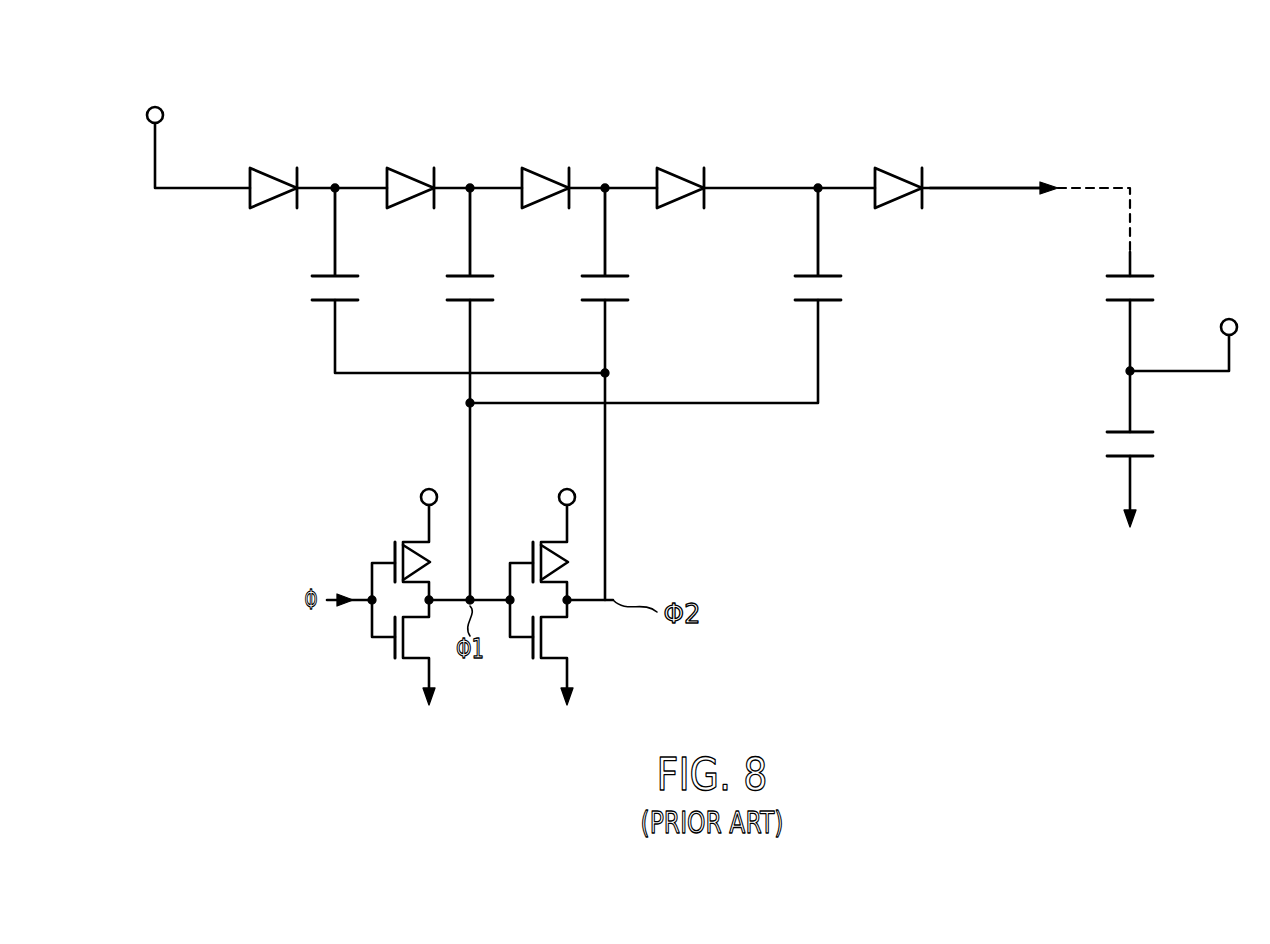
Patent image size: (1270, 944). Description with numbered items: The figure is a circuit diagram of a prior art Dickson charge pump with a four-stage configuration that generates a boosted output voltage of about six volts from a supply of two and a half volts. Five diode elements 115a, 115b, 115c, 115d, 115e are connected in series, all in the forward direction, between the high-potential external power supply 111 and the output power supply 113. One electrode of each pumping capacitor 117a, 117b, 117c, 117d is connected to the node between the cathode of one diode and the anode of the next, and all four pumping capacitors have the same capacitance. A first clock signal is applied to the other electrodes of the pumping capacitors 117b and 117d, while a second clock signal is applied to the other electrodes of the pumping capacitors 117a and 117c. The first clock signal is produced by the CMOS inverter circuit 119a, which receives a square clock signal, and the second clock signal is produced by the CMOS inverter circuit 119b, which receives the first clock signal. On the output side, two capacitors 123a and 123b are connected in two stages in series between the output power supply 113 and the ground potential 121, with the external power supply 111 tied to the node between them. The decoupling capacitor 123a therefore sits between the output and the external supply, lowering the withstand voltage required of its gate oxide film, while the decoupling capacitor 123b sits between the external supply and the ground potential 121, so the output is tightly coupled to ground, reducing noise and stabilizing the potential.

The high-potential power supply 111 is at (155, 106).
The output power supply 113 is at (1052, 183).
The diode element 115a is at (276, 165).
The diode element 115b is at (413, 165).
The diode element 115c is at (548, 165).
The diode element 115d is at (683, 165).
The diode element 115e is at (900, 166).
The pumping capacitor 117a is at (355, 305).
The pumping capacitor 117b is at (490, 305).
The pumping capacitor 117c is at (625, 305).
The pumping capacitor 117d is at (838, 305).
The CMOS inverter circuit 119a is at (410, 599).
The CMOS inverter circuit 119b is at (548, 599).
The ground potential 121 is at (1130, 564).
The decoupling capacitor 123a is at (1097, 290).
The decoupling capacitor 123b is at (1097, 445).